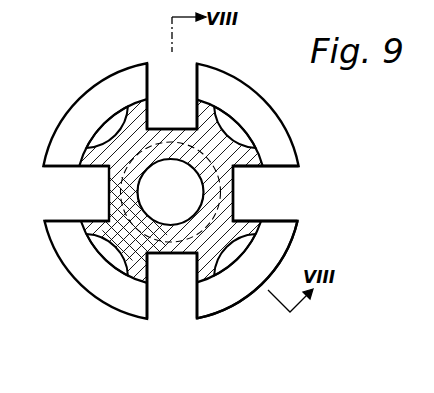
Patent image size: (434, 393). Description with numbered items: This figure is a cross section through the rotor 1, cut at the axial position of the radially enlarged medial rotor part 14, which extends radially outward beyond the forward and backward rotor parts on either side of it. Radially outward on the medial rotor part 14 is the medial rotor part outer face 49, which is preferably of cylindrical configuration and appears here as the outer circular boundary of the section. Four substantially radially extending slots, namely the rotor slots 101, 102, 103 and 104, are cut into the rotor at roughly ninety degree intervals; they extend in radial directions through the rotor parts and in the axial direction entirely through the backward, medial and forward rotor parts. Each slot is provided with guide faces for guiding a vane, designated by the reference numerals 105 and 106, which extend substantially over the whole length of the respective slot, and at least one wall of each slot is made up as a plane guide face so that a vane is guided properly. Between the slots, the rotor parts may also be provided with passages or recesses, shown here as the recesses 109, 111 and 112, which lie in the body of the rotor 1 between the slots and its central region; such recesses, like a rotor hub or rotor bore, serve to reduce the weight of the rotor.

The rotor 1 is at (183, 204).
The radially enlarged medial rotor part 14 is at (108, 82).
The medial rotor part outer face 49 is at (247, 299).
The rotor slot 101 is at (116, 122).
The rotor slot 102 is at (186, 124).
The rotor slot 103 is at (282, 193).
The rotor slot 104 is at (168, 318).
The guide face 105 is at (197, 86).
The guide face 106 is at (147, 71).
The passage or recess 109 is at (102, 252).
The passage or recess 111 is at (233, 119).
The passage or recess 112 is at (242, 238).